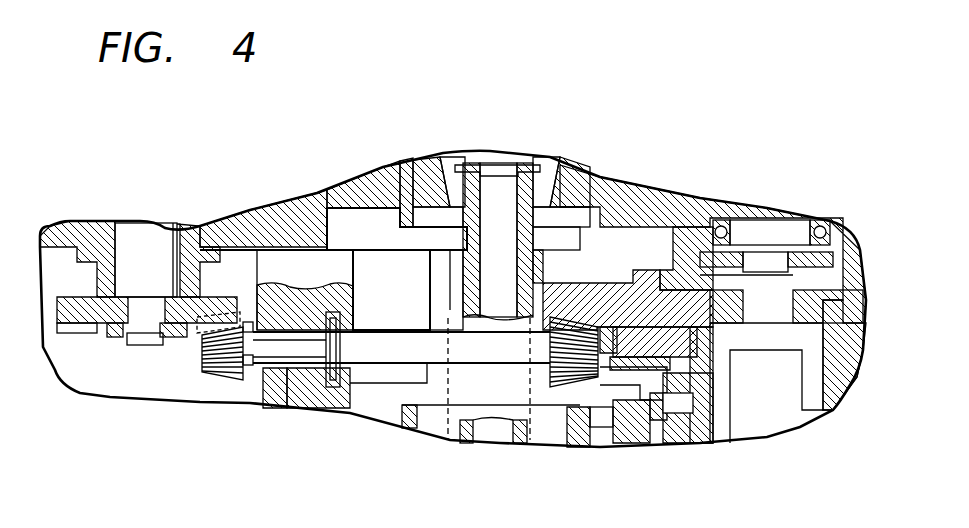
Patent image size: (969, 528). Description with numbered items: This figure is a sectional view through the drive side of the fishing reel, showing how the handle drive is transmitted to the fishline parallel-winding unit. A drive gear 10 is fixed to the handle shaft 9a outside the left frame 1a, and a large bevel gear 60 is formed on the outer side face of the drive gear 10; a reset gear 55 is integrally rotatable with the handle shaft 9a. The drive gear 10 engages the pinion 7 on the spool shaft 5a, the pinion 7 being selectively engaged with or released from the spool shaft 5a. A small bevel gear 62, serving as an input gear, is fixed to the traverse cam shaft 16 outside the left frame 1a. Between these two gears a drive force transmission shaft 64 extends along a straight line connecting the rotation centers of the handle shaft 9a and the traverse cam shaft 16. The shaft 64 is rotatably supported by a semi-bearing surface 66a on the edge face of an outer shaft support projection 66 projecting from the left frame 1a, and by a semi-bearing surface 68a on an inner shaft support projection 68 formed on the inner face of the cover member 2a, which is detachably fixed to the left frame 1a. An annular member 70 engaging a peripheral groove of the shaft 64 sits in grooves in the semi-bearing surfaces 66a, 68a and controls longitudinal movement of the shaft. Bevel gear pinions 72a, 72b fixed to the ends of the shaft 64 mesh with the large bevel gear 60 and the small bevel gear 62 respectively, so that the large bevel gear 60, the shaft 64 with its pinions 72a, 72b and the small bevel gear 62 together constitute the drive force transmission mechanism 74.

The left frame 1a is at (237, 222).
The traverse cam shaft 16 is at (150, 235).
The small bevel gear 62 is at (80, 330).
The bevel gear pinion 72b is at (217, 365).
The semi-bearing surface 66a is at (300, 317).
The outer shaft support projection 66 is at (350, 283).
The pinion 7 is at (437, 280).
The spool shaft 5a is at (503, 180).
The large bevel gear 60 is at (613, 290).
The drive gear 10 is at (650, 273).
The reset gear 55 is at (690, 215).
The drive force transmission shaft 64 is at (312, 358).
The annular member 70 is at (333, 347).
The inner shaft support projection 68 is at (330, 403).
The semi-bearing surface 68a is at (287, 363).
The drive force transmission mechanism 74 is at (490, 390).
The bevel gear pinion 72a is at (577, 370).
The cover member 2a is at (633, 433).
The handle shaft 9a is at (727, 407).